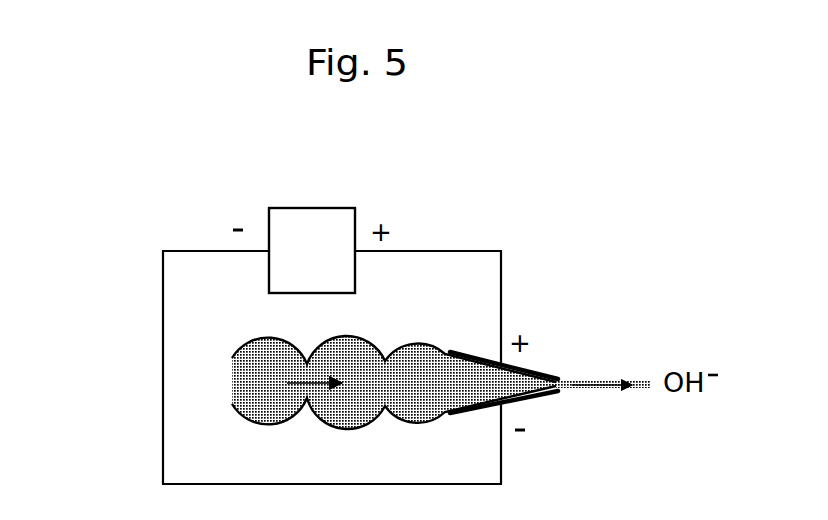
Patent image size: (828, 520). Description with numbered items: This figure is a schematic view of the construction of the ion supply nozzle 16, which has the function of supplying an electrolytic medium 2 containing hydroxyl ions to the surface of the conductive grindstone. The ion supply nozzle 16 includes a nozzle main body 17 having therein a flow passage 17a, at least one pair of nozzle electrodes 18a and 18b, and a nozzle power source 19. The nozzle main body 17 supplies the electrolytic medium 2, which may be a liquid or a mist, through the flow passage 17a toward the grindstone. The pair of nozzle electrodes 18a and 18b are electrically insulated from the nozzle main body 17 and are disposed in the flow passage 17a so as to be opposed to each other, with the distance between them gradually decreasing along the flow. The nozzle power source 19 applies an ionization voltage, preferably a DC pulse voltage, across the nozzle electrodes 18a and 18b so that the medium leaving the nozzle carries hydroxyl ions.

The ion supply nozzle 16 is at (168, 232).
The nozzle power source 19 is at (312, 250).
The nozzle main body 17 is at (240, 409).
The flow passage 17a is at (345, 403).
The nozzle electrode 18a is at (540, 371).
The nozzle electrode 18b is at (533, 397).
The electrolytic medium 2 is at (624, 386).